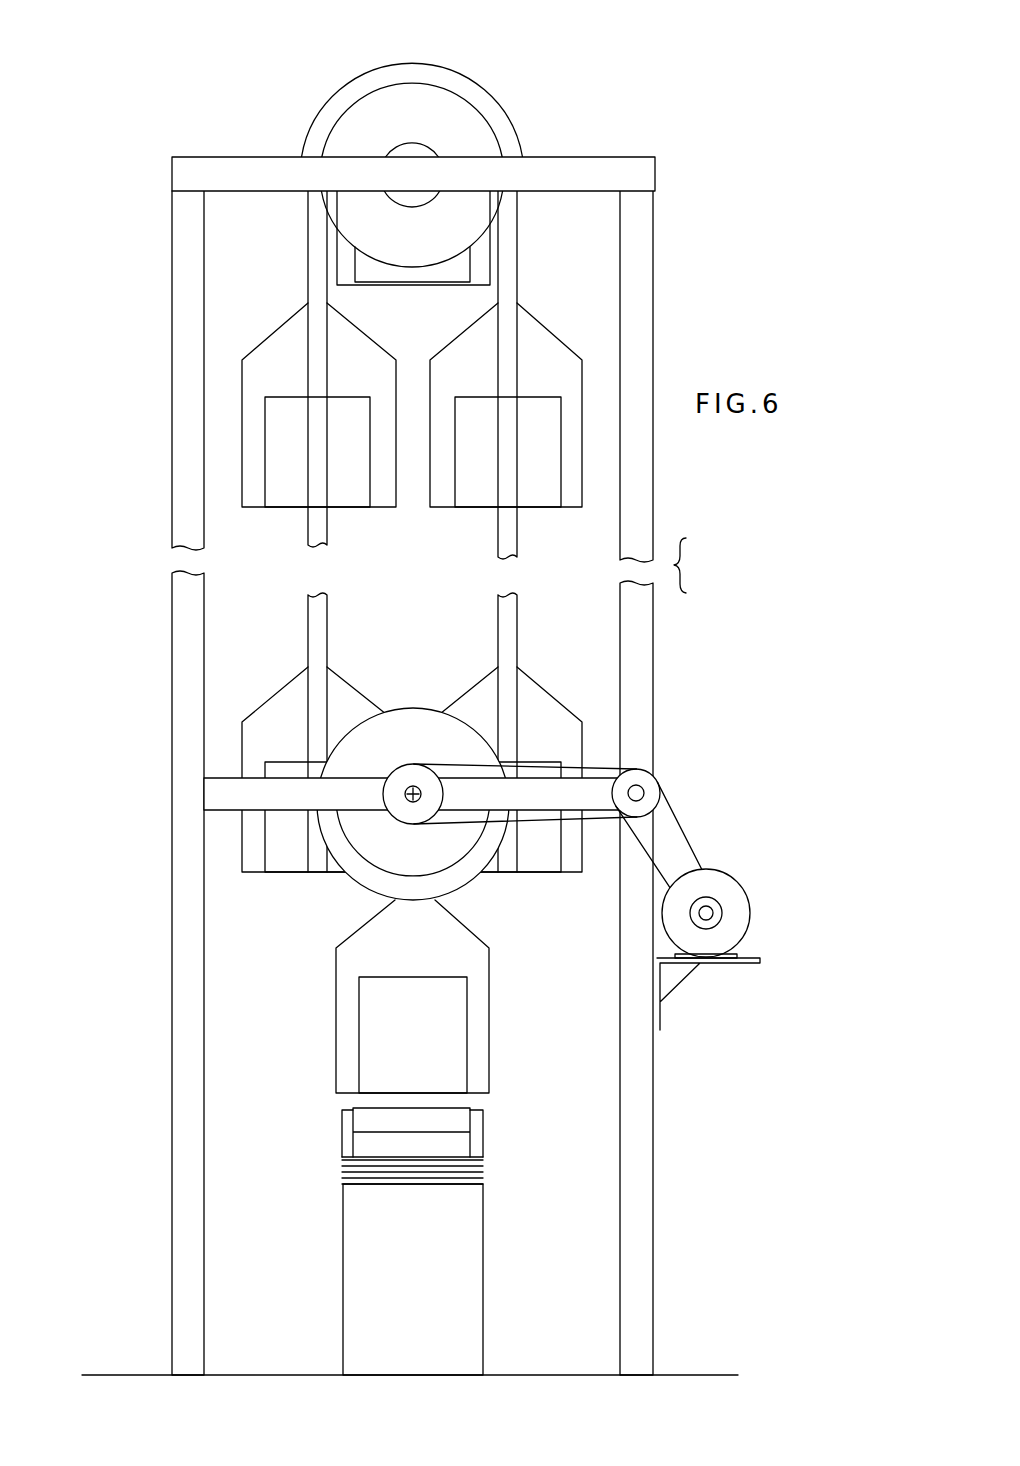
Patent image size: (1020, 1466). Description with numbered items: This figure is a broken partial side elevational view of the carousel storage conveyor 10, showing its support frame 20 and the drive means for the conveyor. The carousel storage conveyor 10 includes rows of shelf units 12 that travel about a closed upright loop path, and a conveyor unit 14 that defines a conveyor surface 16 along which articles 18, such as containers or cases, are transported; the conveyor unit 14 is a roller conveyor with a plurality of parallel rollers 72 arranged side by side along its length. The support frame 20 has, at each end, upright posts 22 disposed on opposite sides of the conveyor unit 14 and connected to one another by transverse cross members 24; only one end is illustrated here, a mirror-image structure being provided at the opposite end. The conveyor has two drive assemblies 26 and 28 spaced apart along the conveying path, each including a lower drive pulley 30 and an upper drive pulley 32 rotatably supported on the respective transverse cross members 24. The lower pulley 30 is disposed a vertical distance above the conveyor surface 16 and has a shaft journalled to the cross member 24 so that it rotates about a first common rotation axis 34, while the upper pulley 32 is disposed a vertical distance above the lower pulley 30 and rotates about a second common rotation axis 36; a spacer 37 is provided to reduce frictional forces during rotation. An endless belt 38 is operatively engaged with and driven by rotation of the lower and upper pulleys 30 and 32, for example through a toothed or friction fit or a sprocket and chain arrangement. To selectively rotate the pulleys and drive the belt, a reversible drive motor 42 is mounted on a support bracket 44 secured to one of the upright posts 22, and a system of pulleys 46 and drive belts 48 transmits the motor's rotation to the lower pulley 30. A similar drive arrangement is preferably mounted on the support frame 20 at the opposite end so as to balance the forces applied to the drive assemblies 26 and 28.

The carousel storage conveyor 10 is at (123, 369).
The shelf units 12 is at (490, 1032).
The conveyor unit 14 is at (484, 1223).
The conveyor surface 16 is at (367, 1105).
The articles 18 is at (422, 1052).
The support frame 20 is at (618, 155).
The upright posts 22 is at (180, 270).
The transverse cross members 24 is at (223, 783).
The drive assembly 26 is at (447, 133).
The drive assembly 28 is at (412, 110).
The lower drive pulley 30 is at (408, 713).
The upper drive pulley 32 is at (430, 95).
The first common rotation axis 34 is at (412, 800).
The second common rotation axis 36 is at (412, 168).
The spacer 37 is at (422, 152).
The endless belt 38 is at (503, 132).
The reversible drive motor 42 is at (723, 877).
The support bracket 44 is at (715, 947).
The sprockets or pulleys 46 is at (405, 767).
The drive chains or belts 48 is at (598, 763).
The rollers 72 is at (363, 1123).